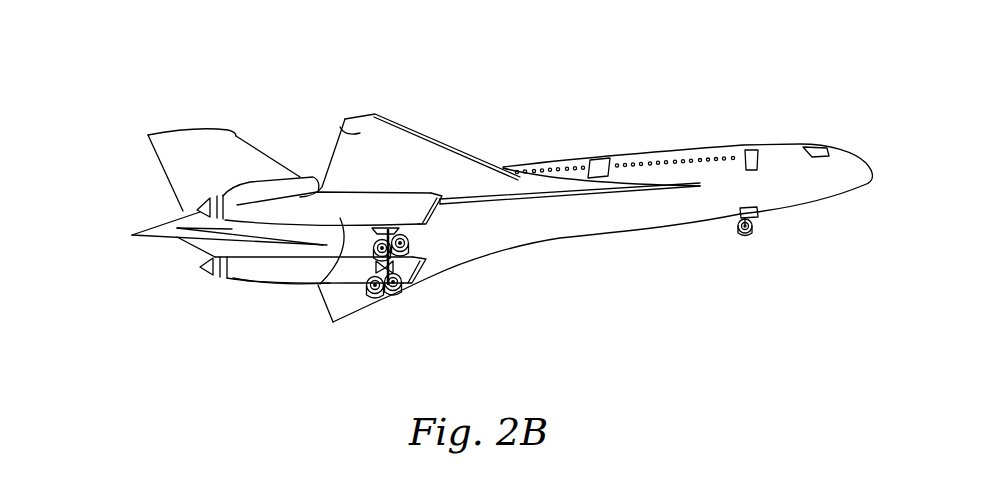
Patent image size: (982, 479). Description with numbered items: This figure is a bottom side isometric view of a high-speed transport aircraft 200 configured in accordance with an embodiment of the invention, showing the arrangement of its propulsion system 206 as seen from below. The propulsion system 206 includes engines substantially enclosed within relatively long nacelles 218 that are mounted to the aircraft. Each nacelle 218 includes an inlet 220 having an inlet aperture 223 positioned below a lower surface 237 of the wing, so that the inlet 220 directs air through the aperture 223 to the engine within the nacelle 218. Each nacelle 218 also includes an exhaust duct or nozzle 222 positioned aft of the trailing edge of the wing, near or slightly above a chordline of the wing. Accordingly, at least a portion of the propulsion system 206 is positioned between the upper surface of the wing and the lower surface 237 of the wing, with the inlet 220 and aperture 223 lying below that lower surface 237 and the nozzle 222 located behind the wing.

The high-speed aircraft 200 is at (680, 55).
The propulsion system 206 is at (190, 266).
The nacelle 218 is at (281, 283).
The inlet 220 is at (450, 212).
The exhaust duct or nozzle 222 is at (244, 183).
The inlet aperture 223 is at (441, 203).
The lower surface of the wing 237 is at (338, 140).